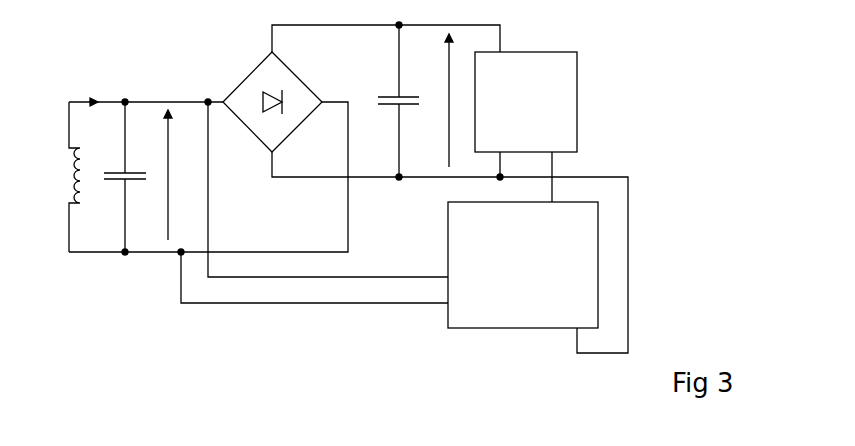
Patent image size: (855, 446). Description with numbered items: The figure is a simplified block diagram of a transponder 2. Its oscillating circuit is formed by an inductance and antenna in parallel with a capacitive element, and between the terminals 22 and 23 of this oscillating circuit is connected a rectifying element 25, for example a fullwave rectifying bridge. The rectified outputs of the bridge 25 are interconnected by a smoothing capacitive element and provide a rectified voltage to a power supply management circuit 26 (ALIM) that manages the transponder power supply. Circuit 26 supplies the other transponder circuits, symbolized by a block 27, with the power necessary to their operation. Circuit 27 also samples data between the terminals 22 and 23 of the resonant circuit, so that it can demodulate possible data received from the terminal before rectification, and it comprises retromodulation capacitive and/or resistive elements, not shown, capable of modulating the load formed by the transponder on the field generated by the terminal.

The transponder 2 is at (176, 350).
The terminal of the oscillating circuit 22 is at (125, 99).
The terminal of the oscillating circuit 23 is at (125, 255).
The rectifying element 25 is at (248, 74).
The power supply management circuit 26 is at (520, 52).
The other transponder circuits 27 is at (491, 330).